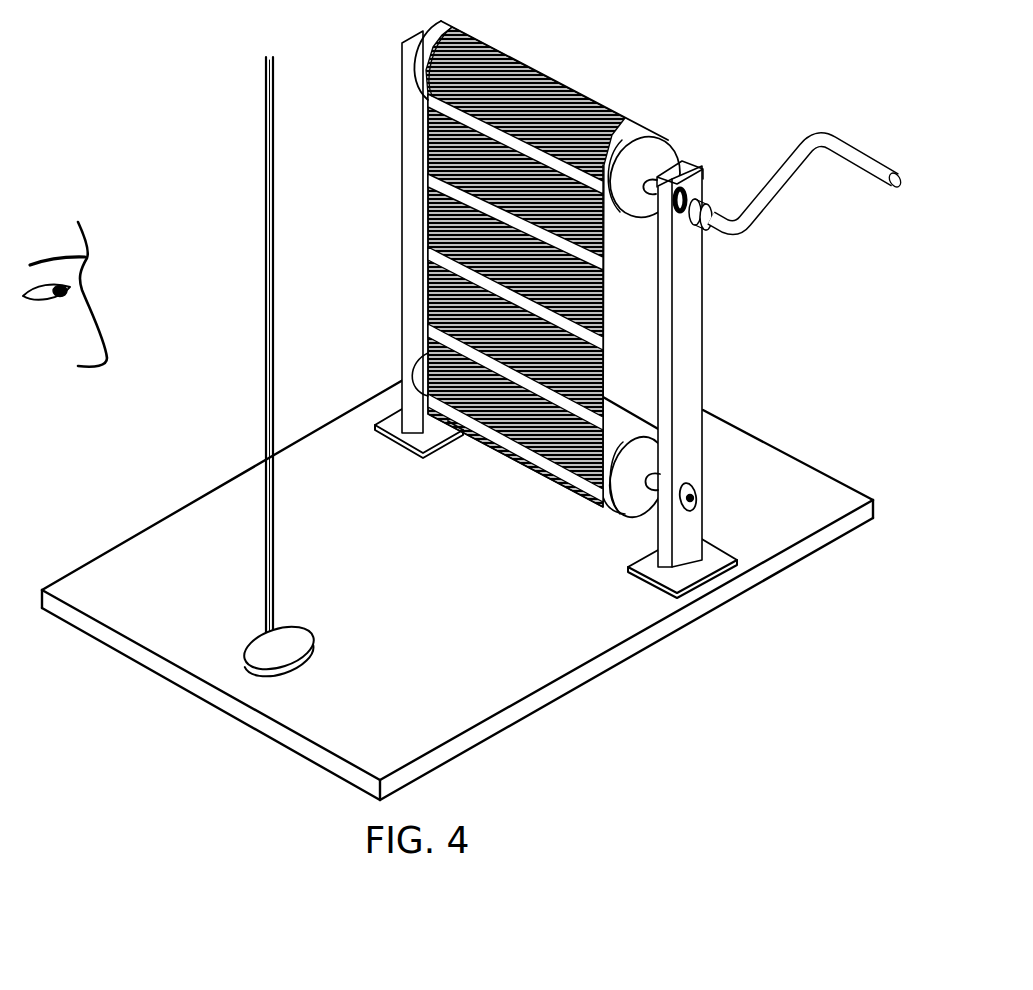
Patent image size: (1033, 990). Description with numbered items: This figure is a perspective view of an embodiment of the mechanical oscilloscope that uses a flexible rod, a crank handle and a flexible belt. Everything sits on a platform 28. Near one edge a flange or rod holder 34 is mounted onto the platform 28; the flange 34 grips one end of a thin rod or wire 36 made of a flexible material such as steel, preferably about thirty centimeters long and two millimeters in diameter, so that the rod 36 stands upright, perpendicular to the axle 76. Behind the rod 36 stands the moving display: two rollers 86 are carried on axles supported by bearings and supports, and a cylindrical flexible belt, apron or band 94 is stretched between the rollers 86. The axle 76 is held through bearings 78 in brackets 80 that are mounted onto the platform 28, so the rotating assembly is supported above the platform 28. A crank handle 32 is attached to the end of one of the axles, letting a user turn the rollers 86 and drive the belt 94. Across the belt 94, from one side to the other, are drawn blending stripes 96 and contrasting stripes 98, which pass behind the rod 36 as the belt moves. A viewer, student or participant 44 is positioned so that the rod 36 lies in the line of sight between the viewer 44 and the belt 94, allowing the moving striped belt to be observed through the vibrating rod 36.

The platform 28 is at (232, 520).
The crank handle 32 is at (833, 143).
The flange or rod holder 34 is at (258, 651).
The rod or wire 36 is at (265, 421).
The viewer 44 is at (56, 376).
The axle 76 is at (700, 200).
The bearings 78 is at (690, 168).
The brackets 80 is at (429, 423).
The rollers 86 is at (420, 388).
The flexible belt 94 is at (557, 90).
The blending stripes 96 is at (605, 197).
The contrasting stripes 98 is at (415, 393).